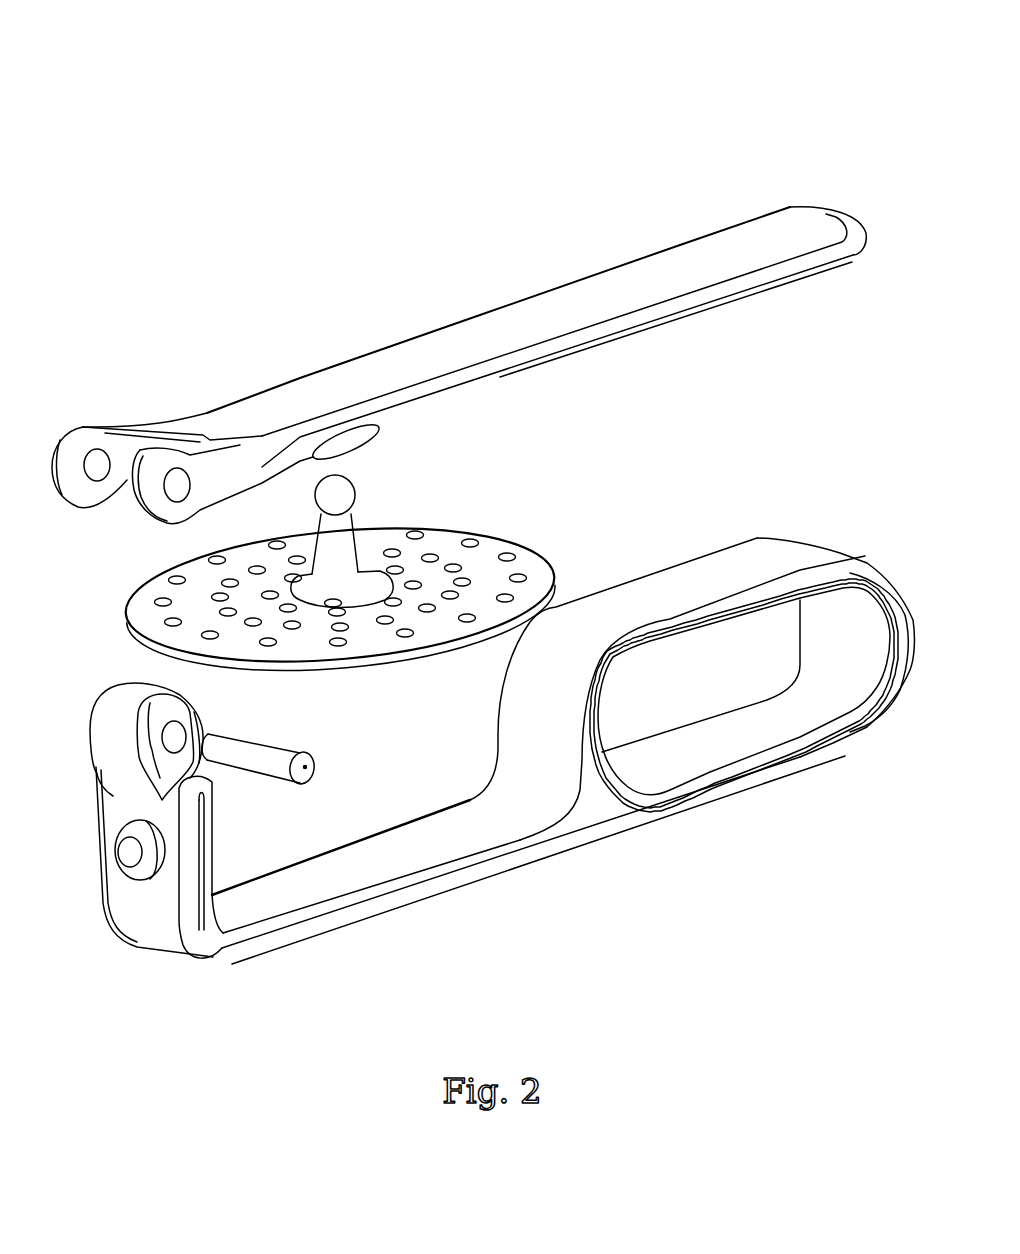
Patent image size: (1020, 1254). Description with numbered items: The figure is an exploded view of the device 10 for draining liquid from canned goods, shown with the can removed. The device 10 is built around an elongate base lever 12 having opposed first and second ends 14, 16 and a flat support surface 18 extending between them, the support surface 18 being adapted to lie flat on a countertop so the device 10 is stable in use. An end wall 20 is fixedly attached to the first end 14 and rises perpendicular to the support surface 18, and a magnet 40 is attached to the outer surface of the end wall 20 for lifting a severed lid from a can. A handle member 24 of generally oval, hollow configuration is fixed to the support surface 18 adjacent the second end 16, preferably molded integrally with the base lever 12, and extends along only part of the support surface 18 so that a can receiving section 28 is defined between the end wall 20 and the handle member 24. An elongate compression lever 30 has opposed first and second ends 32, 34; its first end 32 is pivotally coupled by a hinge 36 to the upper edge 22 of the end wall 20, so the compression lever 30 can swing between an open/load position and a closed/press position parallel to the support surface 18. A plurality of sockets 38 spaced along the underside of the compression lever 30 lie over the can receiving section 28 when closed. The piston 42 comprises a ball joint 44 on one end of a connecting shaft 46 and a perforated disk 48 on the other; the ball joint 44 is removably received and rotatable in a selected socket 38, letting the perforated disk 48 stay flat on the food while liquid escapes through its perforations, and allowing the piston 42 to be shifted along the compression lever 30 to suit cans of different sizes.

The device 10 is at (268, 118).
The base lever 12 is at (499, 751).
The first end 14 is at (218, 956).
The second end 16 is at (880, 735).
The support surface 18 is at (585, 838).
The end wall 20 is at (150, 925).
The upper edge 22 is at (212, 765).
The handle member 24 is at (704, 553).
The can receiving section 28 is at (391, 798).
The compression lever 30 is at (447, 318).
The first end 32 is at (78, 424).
The second end 34 is at (820, 206).
The hinge 36 is at (118, 684).
The sockets 38 is at (380, 440).
The magnet 40 is at (133, 866).
The piston 42 is at (381, 570).
The ball joint 44 is at (357, 491).
The connecting shaft 46 is at (345, 540).
The perforated disk 48 is at (552, 566).